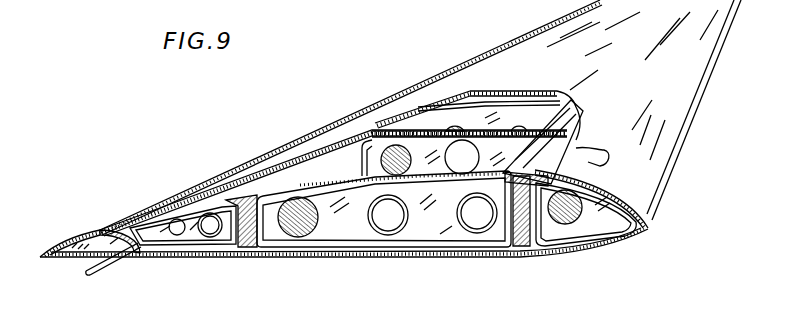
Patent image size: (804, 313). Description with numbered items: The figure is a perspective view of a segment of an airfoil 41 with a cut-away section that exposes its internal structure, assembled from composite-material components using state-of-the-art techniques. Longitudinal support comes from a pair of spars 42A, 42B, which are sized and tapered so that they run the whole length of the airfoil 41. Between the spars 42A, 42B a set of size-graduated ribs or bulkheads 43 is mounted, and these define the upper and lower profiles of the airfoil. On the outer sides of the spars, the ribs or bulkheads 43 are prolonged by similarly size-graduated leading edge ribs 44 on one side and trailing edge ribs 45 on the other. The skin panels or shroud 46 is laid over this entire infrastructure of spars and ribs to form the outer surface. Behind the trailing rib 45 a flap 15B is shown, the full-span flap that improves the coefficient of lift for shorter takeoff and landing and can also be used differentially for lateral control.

The airfoil 41 is at (463, 63).
The ribs or bulkheads 43 is at (454, 236).
The skin panels or shroud 46 is at (297, 153).
The flap 15B is at (91, 231).
The trailing edge ribs 45 is at (188, 238).
The spar 42B is at (248, 247).
The spar 42A is at (543, 249).
The leading edge ribs 44 is at (627, 242).